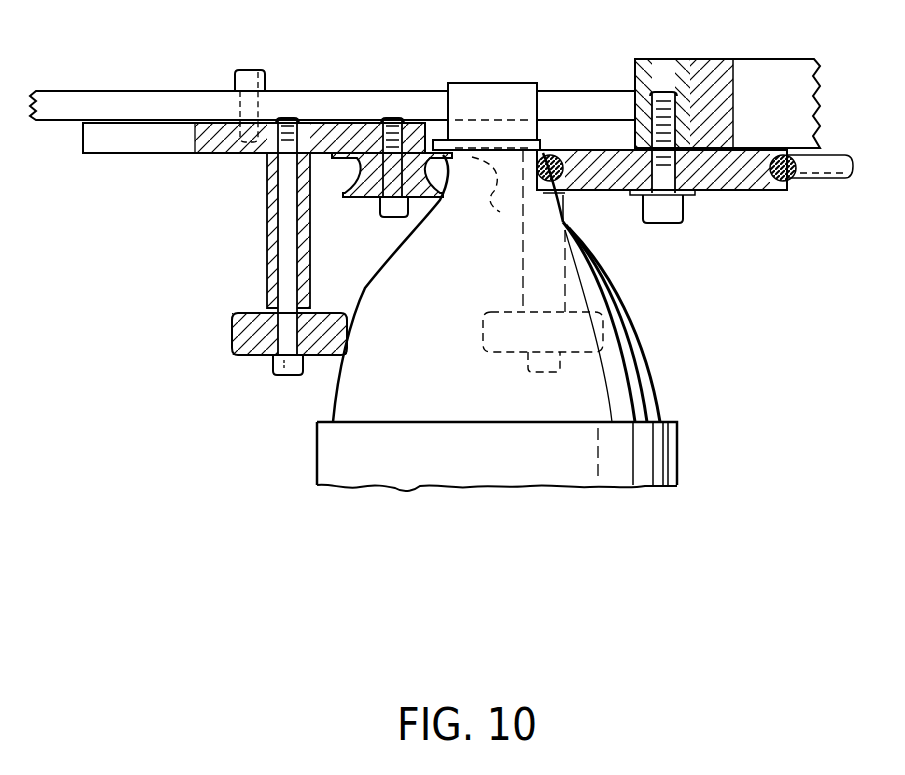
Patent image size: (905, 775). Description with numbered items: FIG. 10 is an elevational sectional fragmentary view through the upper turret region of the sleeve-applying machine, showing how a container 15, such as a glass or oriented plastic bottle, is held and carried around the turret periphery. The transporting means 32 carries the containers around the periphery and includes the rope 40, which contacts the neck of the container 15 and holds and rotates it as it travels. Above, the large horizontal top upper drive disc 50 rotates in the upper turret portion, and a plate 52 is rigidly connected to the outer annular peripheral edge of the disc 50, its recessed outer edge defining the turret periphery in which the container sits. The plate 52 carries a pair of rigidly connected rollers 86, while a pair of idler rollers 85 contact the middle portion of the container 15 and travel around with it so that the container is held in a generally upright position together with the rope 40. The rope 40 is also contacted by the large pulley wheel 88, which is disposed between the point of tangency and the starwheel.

The container 15 is at (652, 383).
The transporting means 32 is at (413, 90).
The rope 40 is at (565, 195).
The top upper drive disc 50 is at (333, 98).
The plate 52 is at (147, 132).
The idler rollers 85 is at (232, 343).
The rollers 86 is at (365, 200).
The large pulley wheel 88 is at (735, 192).